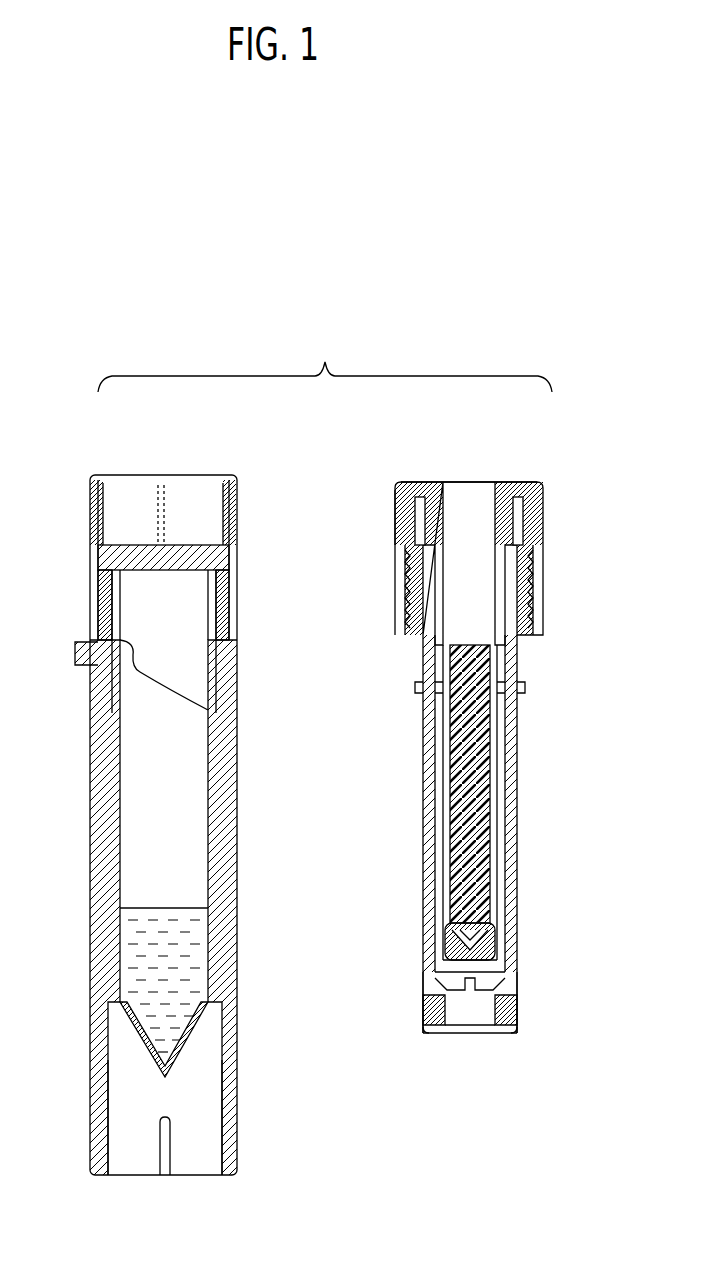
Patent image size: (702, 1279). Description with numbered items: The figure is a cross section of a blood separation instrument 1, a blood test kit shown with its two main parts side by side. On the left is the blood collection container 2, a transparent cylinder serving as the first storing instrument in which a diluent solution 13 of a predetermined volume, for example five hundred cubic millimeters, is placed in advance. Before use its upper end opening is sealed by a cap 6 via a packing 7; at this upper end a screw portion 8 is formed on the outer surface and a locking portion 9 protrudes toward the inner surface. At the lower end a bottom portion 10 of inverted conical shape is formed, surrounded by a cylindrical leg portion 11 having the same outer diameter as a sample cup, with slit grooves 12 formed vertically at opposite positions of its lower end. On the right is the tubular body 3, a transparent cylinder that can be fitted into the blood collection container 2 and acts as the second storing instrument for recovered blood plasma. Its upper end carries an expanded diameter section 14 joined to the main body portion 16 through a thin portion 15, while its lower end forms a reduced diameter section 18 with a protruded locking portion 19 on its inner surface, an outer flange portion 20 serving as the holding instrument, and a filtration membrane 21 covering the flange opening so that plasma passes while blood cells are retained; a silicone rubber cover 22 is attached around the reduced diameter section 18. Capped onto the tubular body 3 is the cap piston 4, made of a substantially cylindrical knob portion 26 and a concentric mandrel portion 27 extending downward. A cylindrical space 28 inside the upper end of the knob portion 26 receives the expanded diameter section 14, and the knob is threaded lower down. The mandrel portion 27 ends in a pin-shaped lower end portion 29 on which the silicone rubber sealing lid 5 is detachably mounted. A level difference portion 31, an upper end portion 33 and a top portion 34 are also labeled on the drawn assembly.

The blood separation instrument 1 is at (325, 357).
The blood collection container 2 is at (88, 734).
The tubular body 3 is at (422, 753).
The cap piston 4 is at (532, 478).
The sealing lid 5 is at (514, 948).
The cap 6 is at (212, 475).
The packing 7 is at (98, 568).
The screw portion 8 is at (228, 604).
The locking portion 9 is at (95, 647).
The bottom portion 10 is at (165, 1077).
The leg portion 11 is at (95, 1055).
The slit groove 12 is at (168, 1176).
The diluent solution 13 is at (130, 963).
The expanded diameter section 14 is at (527, 527).
The thin portion 15 is at (530, 558).
The main body portion 16 is at (520, 666).
The reduced diameter section 18 is at (425, 1002).
The protruded locking portion 19 is at (432, 984).
The outer flange portion 20 is at (428, 1034).
The filtration membrane 21 is at (465, 1026).
The cover 22 is at (520, 1020).
The knob portion 26 is at (398, 497).
The mandrel portion 27 is at (490, 786).
The space 28 is at (418, 520).
The lower end portion 29 is at (492, 940).
The level difference portion 31 is at (448, 950).
The upper end portion 33 is at (405, 560).
The top portion 34 is at (421, 484).